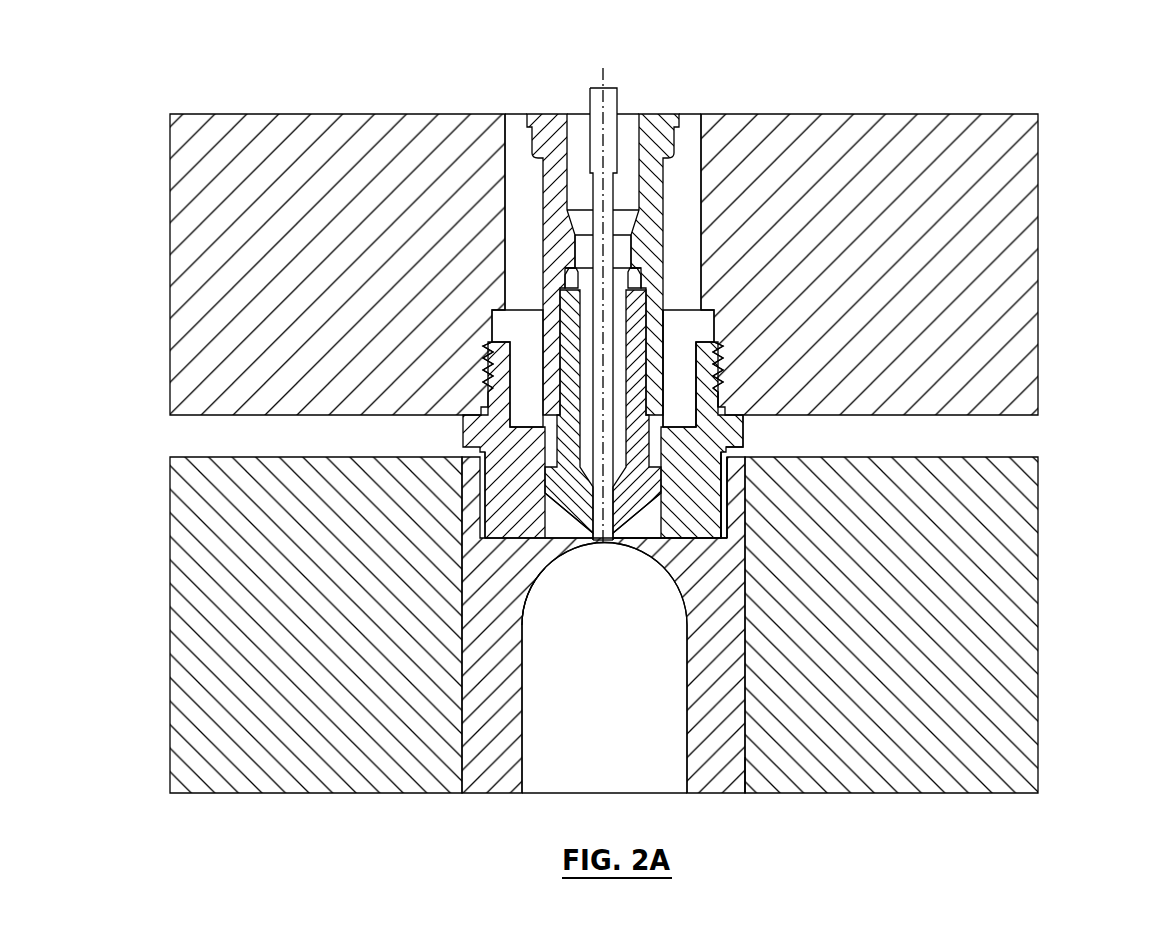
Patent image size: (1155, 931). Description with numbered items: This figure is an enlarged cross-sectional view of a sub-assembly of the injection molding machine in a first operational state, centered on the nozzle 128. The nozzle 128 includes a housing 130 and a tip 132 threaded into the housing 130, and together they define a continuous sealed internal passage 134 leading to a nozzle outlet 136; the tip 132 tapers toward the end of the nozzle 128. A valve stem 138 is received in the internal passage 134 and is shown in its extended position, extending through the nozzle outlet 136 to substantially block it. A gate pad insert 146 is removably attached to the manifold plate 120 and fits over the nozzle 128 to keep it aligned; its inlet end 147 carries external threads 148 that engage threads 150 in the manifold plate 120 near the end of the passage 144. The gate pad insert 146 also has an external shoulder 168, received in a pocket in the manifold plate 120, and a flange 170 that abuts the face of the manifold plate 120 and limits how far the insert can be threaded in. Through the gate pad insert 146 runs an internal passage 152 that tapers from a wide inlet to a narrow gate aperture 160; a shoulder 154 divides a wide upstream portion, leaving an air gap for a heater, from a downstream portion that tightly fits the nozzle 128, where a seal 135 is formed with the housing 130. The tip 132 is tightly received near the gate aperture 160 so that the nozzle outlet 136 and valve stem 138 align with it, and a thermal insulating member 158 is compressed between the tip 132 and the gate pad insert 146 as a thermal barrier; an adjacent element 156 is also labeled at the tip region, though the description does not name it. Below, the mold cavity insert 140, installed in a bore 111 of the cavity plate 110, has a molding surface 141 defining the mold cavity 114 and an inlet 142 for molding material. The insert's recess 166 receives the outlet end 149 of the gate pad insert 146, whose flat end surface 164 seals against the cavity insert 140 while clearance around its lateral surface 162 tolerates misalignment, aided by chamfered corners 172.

The cavity plate 110 is at (1038, 480).
The bore 111 is at (747, 757).
The mold cavity 114 is at (645, 748).
The manifold plate 120 is at (1038, 157).
The nozzle 128 is at (645, 88).
The housing 130 is at (667, 118).
The tip 132 is at (715, 312).
The internal passage 134 is at (585, 292).
The seal 135 is at (700, 540).
The nozzle outlet 136 is at (567, 542).
The valve stem 138 is at (620, 114).
The mold cavity insert 140 is at (712, 782).
The molding surface 141 is at (685, 675).
The inlet 142 is at (603, 543).
The passage 144 is at (513, 158).
The gate pad insert 146 is at (708, 465).
The inlet end 147 is at (490, 378).
The external threads 148 is at (722, 368).
The outlet end 149 is at (740, 433).
The threads 150 is at (703, 323).
The internal passage 152 is at (510, 367).
The shoulder 154 is at (483, 452).
The nozzle tip insert 156 is at (545, 480).
The thermal insulating member 158 is at (690, 560).
The gate aperture 160 is at (617, 542).
The lateral surface 162 is at (735, 505).
The flat end surface 164 is at (517, 548).
The recess 166 is at (713, 485).
The external shoulder 168 is at (722, 403).
The flange 170 is at (723, 410).
The chamfered corners 172 is at (480, 460).